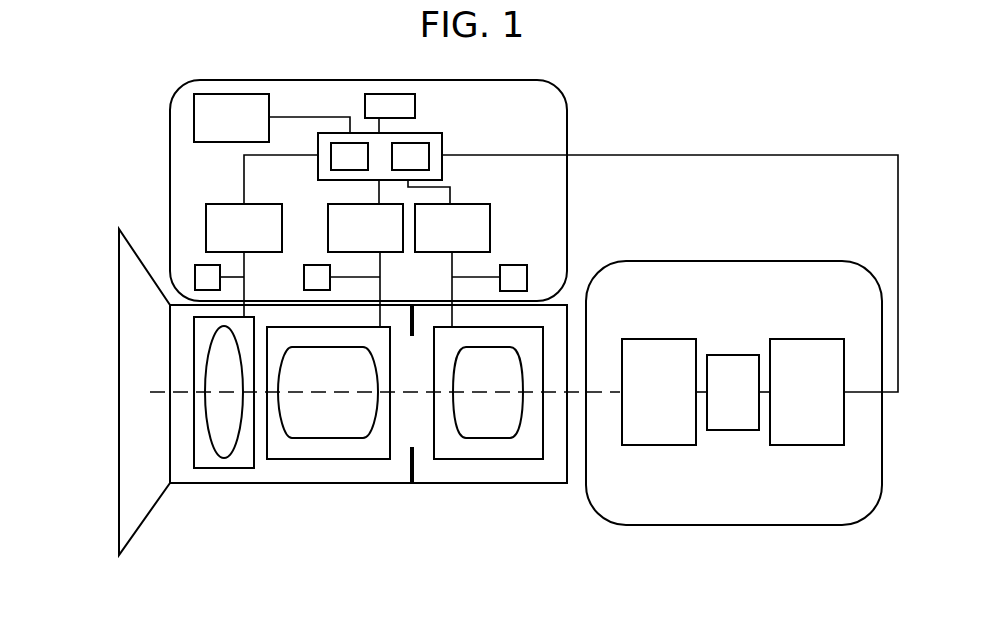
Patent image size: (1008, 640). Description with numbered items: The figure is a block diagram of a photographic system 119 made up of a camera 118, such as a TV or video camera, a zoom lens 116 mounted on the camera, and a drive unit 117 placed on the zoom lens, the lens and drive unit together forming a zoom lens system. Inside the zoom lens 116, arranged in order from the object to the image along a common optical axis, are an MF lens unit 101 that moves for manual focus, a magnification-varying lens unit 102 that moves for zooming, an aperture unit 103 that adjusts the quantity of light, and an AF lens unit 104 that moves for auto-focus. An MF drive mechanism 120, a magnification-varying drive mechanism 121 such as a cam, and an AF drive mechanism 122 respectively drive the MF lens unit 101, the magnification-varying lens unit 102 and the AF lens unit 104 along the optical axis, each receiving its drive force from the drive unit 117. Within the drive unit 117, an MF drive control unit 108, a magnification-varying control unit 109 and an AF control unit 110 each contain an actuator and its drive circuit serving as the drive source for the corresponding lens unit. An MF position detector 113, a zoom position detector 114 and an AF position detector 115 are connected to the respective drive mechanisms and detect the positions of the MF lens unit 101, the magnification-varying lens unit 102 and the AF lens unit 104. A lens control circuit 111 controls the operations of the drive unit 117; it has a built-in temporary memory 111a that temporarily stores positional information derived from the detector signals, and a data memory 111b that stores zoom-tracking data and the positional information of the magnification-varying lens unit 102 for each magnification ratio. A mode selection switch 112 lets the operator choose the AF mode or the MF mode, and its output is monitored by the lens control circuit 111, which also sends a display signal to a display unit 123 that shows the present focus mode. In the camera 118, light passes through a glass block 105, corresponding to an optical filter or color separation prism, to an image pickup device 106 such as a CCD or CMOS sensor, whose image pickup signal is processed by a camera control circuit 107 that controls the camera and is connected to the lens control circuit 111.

The MF lens unit 101 is at (224, 392).
The magnification-varying lens unit 102 is at (328, 392).
The aperture unit 103 is at (410, 470).
The AF lens unit 104 is at (488, 392).
The glass block 105 is at (664, 392).
The image pickup device 106 is at (738, 392).
The camera control circuit 107 is at (807, 392).
The MF drive control unit 108 is at (244, 260).
The magnification-varying control unit 109 is at (365, 265).
The AF control unit 110 is at (452, 265).
The lens control circuit 111 is at (442, 168).
The temporary memory 111a is at (331, 160).
The data memory 111b is at (430, 150).
The mode selection switch 112 is at (272, 118).
The MF position detector 113 is at (197, 266).
The zoom position detector 114 is at (313, 265).
The AF position detector 115 is at (518, 265).
The zoom lens 116 is at (119, 308).
The drive unit 117 is at (170, 150).
The camera 118 is at (730, 261).
The photographic system 119 is at (195, 545).
The MF drive mechanism 120 is at (226, 468).
The magnification-varying drive mechanism 121 is at (295, 459).
The AF drive mechanism 122 is at (468, 459).
The display unit 123 is at (415, 104).